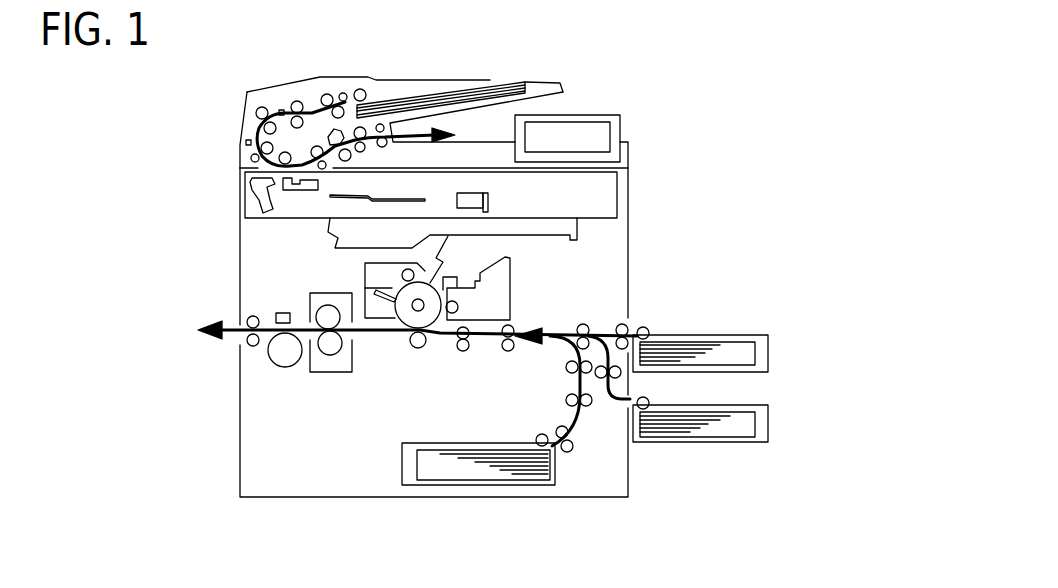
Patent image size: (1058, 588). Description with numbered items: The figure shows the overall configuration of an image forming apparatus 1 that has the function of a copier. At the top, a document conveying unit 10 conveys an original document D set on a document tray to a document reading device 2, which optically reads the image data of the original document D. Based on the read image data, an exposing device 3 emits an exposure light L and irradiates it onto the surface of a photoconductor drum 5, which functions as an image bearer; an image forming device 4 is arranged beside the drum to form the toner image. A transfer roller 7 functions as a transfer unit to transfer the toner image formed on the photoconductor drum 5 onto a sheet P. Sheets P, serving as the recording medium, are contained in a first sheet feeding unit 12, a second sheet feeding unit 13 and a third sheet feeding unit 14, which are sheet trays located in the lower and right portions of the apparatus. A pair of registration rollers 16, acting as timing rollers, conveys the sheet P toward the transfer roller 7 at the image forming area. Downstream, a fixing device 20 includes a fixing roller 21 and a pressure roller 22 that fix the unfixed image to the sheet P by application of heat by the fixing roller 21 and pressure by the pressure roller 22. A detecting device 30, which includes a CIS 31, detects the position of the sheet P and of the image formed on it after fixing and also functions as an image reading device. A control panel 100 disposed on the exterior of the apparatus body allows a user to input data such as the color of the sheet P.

The image forming apparatus 1 is at (608, 70).
The document reading device 2 is at (248, 205).
The exposing device 3 is at (338, 236).
The image forming device 4 is at (524, 272).
The photoconductor drum 5 is at (393, 335).
The transfer roller 7 is at (413, 344).
The document conveying unit 10 is at (346, 82).
The first sheet feeding unit 12 is at (493, 490).
The second sheet feeding unit 13 is at (722, 445).
The third sheet feeding unit 14 is at (733, 335).
The pair of registration rollers 16 is at (460, 350).
The fixing device 20 is at (342, 380).
The fixing roller 21 is at (327, 308).
The pressure roller 22 is at (328, 348).
The detecting device 30 is at (278, 378).
The CIS 31 is at (282, 312).
The control panel 100 is at (622, 125).
The original document D is at (515, 82).
The exposure light L is at (452, 268).
The sheet P is at (683, 345).